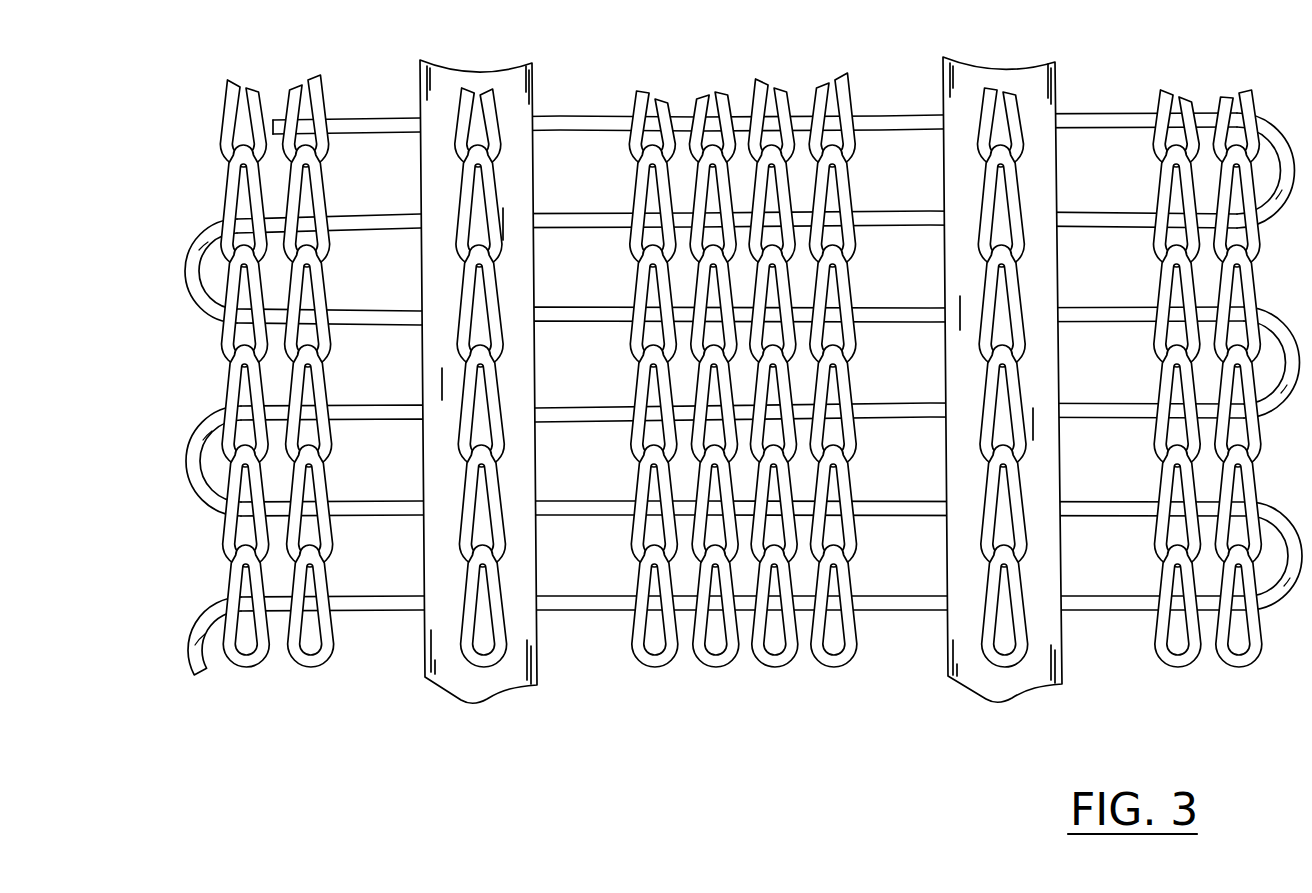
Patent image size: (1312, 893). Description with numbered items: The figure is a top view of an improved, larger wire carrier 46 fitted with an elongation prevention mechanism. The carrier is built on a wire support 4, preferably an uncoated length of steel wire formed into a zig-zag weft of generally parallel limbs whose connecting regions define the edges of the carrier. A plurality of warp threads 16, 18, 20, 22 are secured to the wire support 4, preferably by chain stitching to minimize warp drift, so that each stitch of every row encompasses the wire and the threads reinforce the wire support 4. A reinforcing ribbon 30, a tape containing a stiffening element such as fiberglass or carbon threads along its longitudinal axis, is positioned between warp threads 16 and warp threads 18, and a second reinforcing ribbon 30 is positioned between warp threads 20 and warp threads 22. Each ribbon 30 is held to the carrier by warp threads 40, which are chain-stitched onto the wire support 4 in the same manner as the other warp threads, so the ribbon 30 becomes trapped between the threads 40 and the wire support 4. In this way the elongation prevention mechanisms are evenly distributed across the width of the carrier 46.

The wire support 4 is at (381, 127).
The warp threads 16 is at (257, 662).
The warp threads 18 is at (667, 658).
The warp threads 20 is at (780, 660).
The warp threads 22 is at (1183, 662).
The reinforcing ribbon 30 is at (488, 685).
The warp threads 40 is at (492, 124).
The wire carrier 46 is at (211, 90).